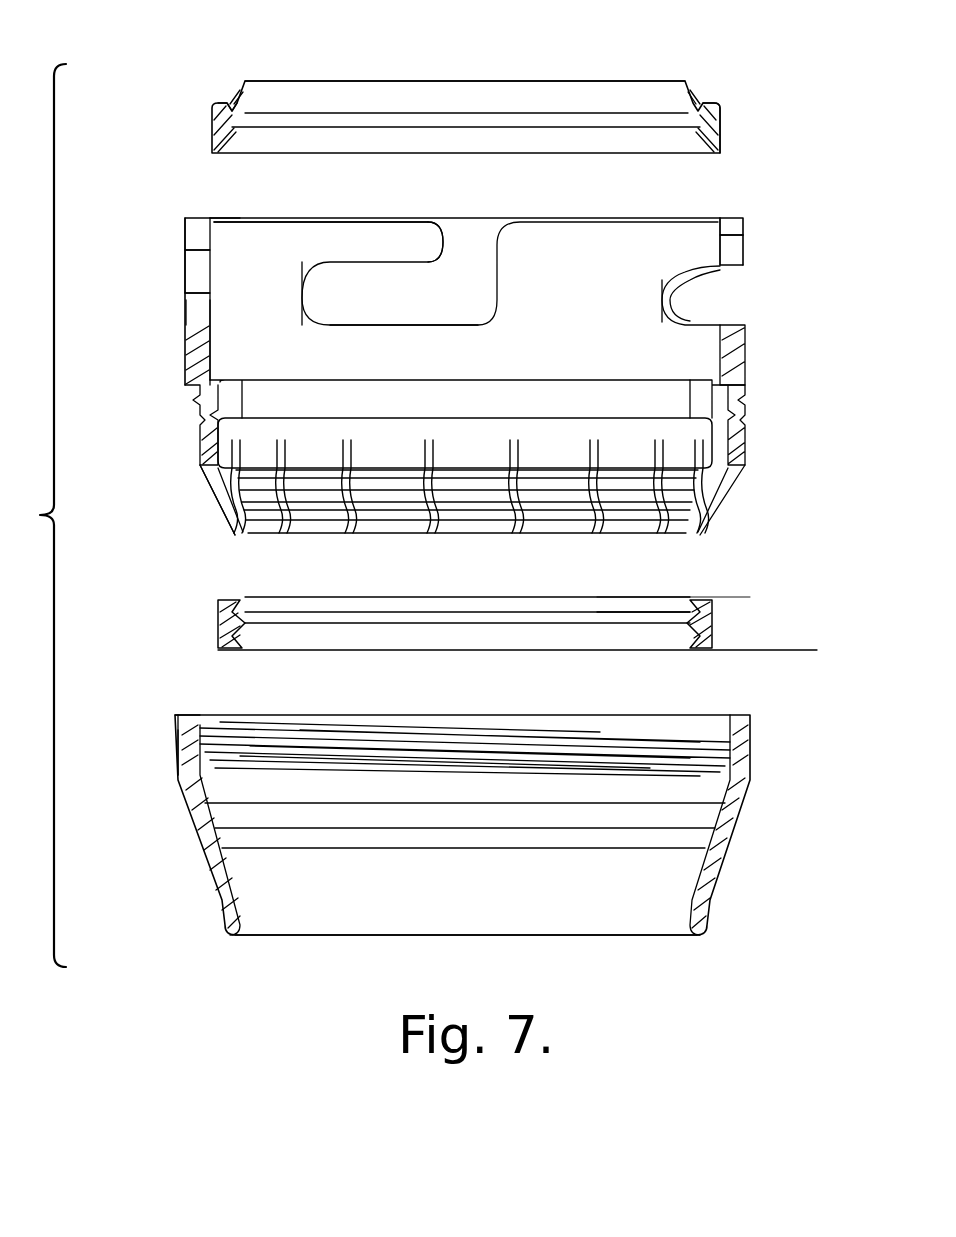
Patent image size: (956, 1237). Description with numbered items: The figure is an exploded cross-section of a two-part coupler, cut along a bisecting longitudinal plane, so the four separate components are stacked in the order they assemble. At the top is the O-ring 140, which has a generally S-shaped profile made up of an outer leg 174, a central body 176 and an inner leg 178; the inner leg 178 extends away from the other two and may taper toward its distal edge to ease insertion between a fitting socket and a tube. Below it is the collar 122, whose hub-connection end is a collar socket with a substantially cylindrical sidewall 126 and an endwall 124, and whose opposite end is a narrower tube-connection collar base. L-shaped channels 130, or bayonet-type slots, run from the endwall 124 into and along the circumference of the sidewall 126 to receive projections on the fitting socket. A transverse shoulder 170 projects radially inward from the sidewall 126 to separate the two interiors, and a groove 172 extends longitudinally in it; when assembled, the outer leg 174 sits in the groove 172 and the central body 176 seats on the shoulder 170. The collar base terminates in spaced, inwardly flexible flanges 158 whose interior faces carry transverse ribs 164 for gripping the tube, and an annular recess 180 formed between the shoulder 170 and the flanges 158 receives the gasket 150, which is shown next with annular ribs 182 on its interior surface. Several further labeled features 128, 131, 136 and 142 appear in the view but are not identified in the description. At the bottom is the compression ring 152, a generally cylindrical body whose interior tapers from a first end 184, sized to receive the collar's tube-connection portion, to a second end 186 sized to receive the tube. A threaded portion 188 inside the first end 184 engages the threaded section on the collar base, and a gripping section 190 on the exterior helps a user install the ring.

The collar 122 is at (745, 252).
The endwall 124 is at (235, 530).
The sidewall 126 is at (190, 248).
The closure body 128 is at (688, 197).
The channels 130 is at (200, 313).
The top edge 131 is at (233, 216).
The channel 136 is at (321, 237).
The O-ring 140 is at (722, 110).
The openings 142 is at (405, 232).
The gasket 150 is at (720, 620).
The compression ring 152 is at (755, 733).
The flanges 158 is at (407, 535).
The transverse ribs 164 is at (275, 528).
The shoulder 170 is at (376, 345).
The groove 172 is at (240, 340).
The outer leg 174 is at (210, 140).
The central body 176 is at (212, 105).
The inner leg 178 is at (270, 82).
The annular recess 180 is at (725, 440).
The annular ribs 182 is at (640, 628).
The first end 184 is at (180, 715).
The second end 186 is at (285, 938).
The threaded portion 188 is at (395, 750).
The gripping section 190 is at (175, 742).